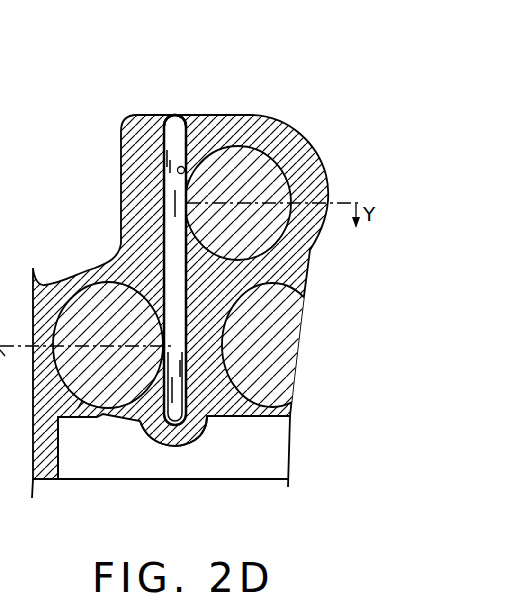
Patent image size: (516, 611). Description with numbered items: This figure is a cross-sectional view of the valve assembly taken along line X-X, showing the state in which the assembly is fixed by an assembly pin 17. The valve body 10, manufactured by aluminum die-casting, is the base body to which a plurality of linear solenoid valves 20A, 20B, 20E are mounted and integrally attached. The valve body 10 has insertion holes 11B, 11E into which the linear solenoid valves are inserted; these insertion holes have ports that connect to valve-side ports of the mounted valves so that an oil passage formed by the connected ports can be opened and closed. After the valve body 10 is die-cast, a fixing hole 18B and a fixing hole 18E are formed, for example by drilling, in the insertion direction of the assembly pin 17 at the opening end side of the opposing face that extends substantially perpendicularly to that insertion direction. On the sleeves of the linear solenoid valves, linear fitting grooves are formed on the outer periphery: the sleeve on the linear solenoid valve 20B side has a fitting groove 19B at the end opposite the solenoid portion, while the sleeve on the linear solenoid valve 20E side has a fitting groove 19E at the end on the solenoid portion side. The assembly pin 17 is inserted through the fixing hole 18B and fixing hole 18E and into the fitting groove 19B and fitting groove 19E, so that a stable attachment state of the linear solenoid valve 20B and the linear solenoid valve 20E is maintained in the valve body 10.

The valve body 10 is at (184, 447).
The insertion hole 11B is at (102, 406).
The insertion hole 11E is at (303, 253).
The assembly pin 17 is at (170, 223).
The fixing hole 18B is at (207, 430).
The fixing hole 18E is at (172, 115).
The fitting groove 19B is at (146, 409).
The fitting groove 19E is at (184, 162).
The linear solenoid valve 20A is at (281, 328).
The linear solenoid valve 20B is at (88, 287).
The linear solenoid valve 20E is at (270, 157).